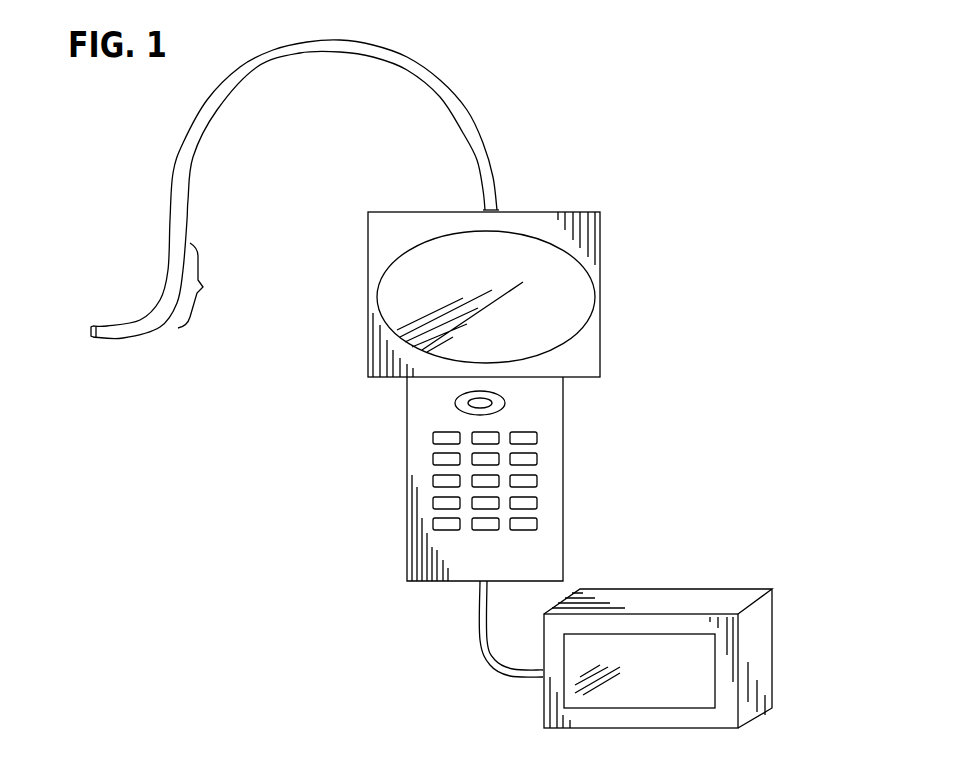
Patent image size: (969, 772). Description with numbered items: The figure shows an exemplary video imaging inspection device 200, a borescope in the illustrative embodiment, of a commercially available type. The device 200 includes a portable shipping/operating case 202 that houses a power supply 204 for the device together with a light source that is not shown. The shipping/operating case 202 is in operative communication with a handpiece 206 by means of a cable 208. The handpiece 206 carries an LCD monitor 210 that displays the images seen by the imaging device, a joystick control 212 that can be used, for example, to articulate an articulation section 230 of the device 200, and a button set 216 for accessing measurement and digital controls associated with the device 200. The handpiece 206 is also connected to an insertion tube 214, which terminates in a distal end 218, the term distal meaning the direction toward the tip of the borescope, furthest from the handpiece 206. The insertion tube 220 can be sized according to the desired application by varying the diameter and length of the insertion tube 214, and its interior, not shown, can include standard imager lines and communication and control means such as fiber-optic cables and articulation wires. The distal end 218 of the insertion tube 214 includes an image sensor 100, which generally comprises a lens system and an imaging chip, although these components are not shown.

The image sensor 100 is at (93, 332).
The video imaging inspection device 200 is at (548, 84).
The portable shipping/operating case 202 is at (677, 730).
The power supply 204 is at (597, 708).
The handpiece 206 is at (563, 380).
The cable 208 is at (480, 660).
The LCD monitor 210 is at (538, 237).
The joystick control 212 is at (500, 409).
The insertion tube 214 is at (403, 55).
The button set 216 is at (537, 524).
The distal end 218 is at (125, 332).
The insertion tube 220 is at (497, 210).
The articulation section 230 is at (215, 285).